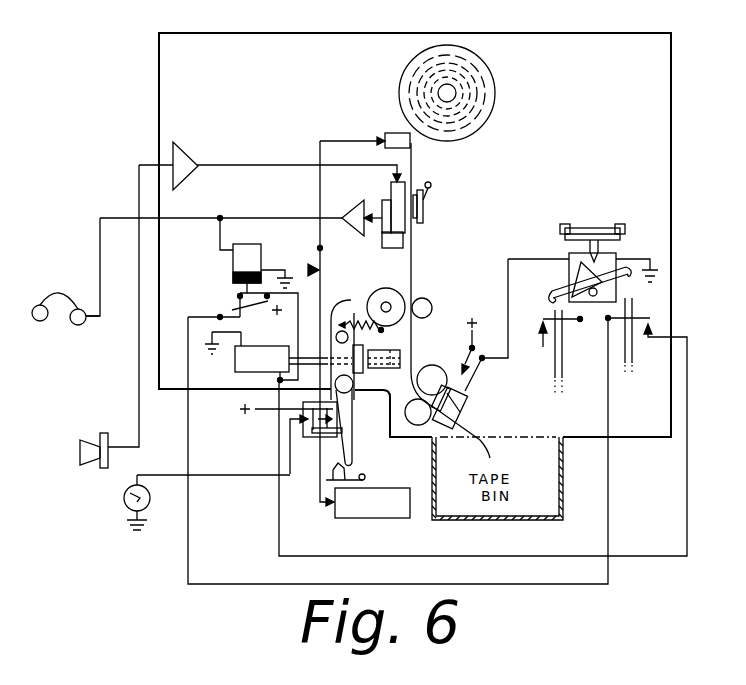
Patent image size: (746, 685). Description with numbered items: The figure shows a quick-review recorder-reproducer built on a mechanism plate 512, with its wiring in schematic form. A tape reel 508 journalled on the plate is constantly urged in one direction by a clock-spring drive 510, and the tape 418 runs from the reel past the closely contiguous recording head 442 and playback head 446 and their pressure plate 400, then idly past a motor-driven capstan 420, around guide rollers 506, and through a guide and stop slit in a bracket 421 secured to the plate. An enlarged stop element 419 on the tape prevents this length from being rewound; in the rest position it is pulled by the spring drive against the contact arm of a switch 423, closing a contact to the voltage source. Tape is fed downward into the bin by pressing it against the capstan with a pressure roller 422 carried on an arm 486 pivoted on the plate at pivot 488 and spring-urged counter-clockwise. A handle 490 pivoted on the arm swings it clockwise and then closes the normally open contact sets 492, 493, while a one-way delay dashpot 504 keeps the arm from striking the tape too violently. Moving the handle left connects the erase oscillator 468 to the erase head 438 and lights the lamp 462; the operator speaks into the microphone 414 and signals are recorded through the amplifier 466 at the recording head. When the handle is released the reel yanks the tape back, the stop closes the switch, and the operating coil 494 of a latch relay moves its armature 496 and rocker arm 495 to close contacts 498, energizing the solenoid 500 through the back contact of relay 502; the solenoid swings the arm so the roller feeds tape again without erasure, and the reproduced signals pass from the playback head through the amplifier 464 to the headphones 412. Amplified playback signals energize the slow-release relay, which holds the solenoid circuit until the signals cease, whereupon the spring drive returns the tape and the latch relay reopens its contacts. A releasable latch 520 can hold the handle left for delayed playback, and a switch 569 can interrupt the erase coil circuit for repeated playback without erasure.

The pressure plate 400 is at (426, 205).
The headphones 412 is at (60, 296).
The microphone 414 is at (80, 451).
The tape 418 is at (420, 268).
The stop element 419 is at (462, 415).
The capstan 420 is at (432, 306).
The bracket 421 is at (466, 394).
The pressure roller 422 is at (398, 284).
The switch 423 is at (486, 364).
The erase head 438 is at (392, 133).
The recording head 442 is at (406, 186).
The playback head 446 is at (403, 240).
The lamp 462 is at (124, 498).
The amplifier 464 is at (356, 211).
The amplifier 466 is at (190, 160).
The erase oscillator 468 is at (343, 518).
The arm 486 is at (358, 296).
The pivot 488 is at (389, 348).
The handle 490 is at (352, 448).
The contact set 492 is at (327, 433).
The contact set 493 is at (300, 424).
The operating coil 494 is at (577, 254).
The rocker arm 495 is at (566, 286).
The armature 496 is at (590, 238).
The contacts 498 is at (657, 328).
The solenoid 500 is at (286, 345).
The relay 502 is at (247, 252).
The dashpot 504 is at (365, 373).
The guide rollers 506 is at (444, 363).
The tape reel 508 is at (497, 96).
The clock-spring drive 510 is at (486, 70).
The plate 512 is at (640, 117).
The latch 520 is at (360, 477).
The switch 569 is at (336, 266).